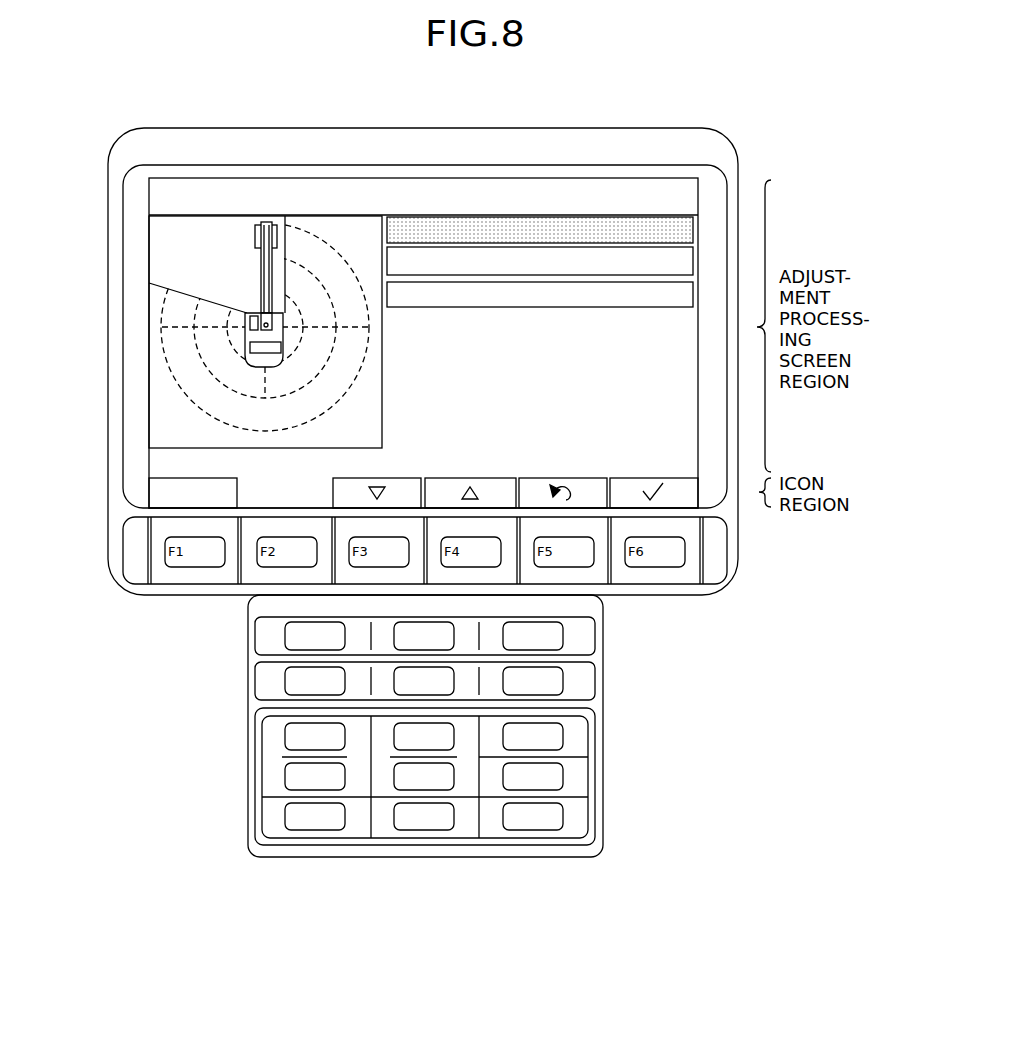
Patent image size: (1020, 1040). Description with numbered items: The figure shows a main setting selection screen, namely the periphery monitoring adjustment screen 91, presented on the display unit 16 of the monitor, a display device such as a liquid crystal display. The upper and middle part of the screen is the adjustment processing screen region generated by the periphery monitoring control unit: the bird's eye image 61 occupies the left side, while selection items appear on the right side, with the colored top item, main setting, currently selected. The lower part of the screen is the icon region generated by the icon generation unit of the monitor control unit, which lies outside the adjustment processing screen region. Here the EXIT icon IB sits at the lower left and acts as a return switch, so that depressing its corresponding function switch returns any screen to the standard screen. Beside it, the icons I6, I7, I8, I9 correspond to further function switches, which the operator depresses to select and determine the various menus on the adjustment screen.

The display unit 16 is at (666, 170).
The periphery monitoring adjustment screen 01 91 is at (634, 194).
The bird's eye image 61 is at (169, 262).
The EXIT icon IB is at (160, 494).
The icon I6 is at (408, 478).
The icon I7 is at (484, 478).
The icon I8 is at (575, 478).
The icon I9 is at (654, 478).